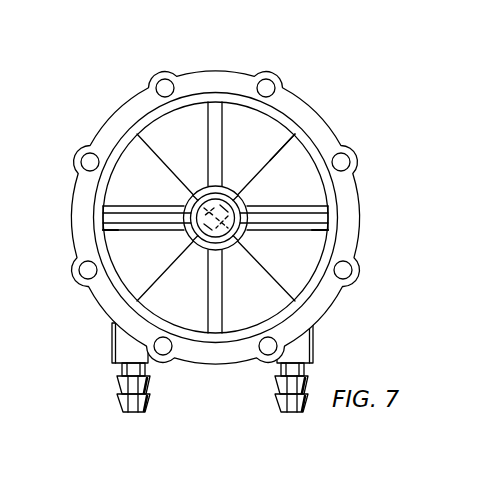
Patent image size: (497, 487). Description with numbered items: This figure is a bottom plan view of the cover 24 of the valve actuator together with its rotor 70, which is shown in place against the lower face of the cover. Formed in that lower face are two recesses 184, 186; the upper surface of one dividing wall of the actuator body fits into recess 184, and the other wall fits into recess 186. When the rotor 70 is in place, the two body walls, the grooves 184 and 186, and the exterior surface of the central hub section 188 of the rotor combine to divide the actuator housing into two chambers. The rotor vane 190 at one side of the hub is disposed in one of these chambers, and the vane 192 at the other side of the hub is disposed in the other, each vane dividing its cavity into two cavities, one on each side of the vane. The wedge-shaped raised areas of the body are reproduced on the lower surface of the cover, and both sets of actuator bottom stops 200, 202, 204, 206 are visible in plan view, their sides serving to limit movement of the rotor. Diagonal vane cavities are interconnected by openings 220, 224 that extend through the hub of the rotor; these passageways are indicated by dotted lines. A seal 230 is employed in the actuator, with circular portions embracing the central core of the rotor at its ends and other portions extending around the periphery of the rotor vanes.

The cover 24 is at (327, 120).
The rotor 70 is at (324, 241).
The recess 184 is at (217, 115).
The recess 186 is at (212, 320).
The central hub section 188 is at (232, 186).
The rotor vane 190 is at (312, 208).
The vane 192 is at (110, 235).
The actuator bottom stop 200 is at (283, 152).
The actuator bottom stop 202 is at (280, 282).
The actuator bottom stop 204 is at (150, 282).
The actuator bottom stop 206 is at (148, 147).
The opening 220 is at (248, 196).
The opening 224 is at (248, 239).
The seal 230 is at (326, 223).